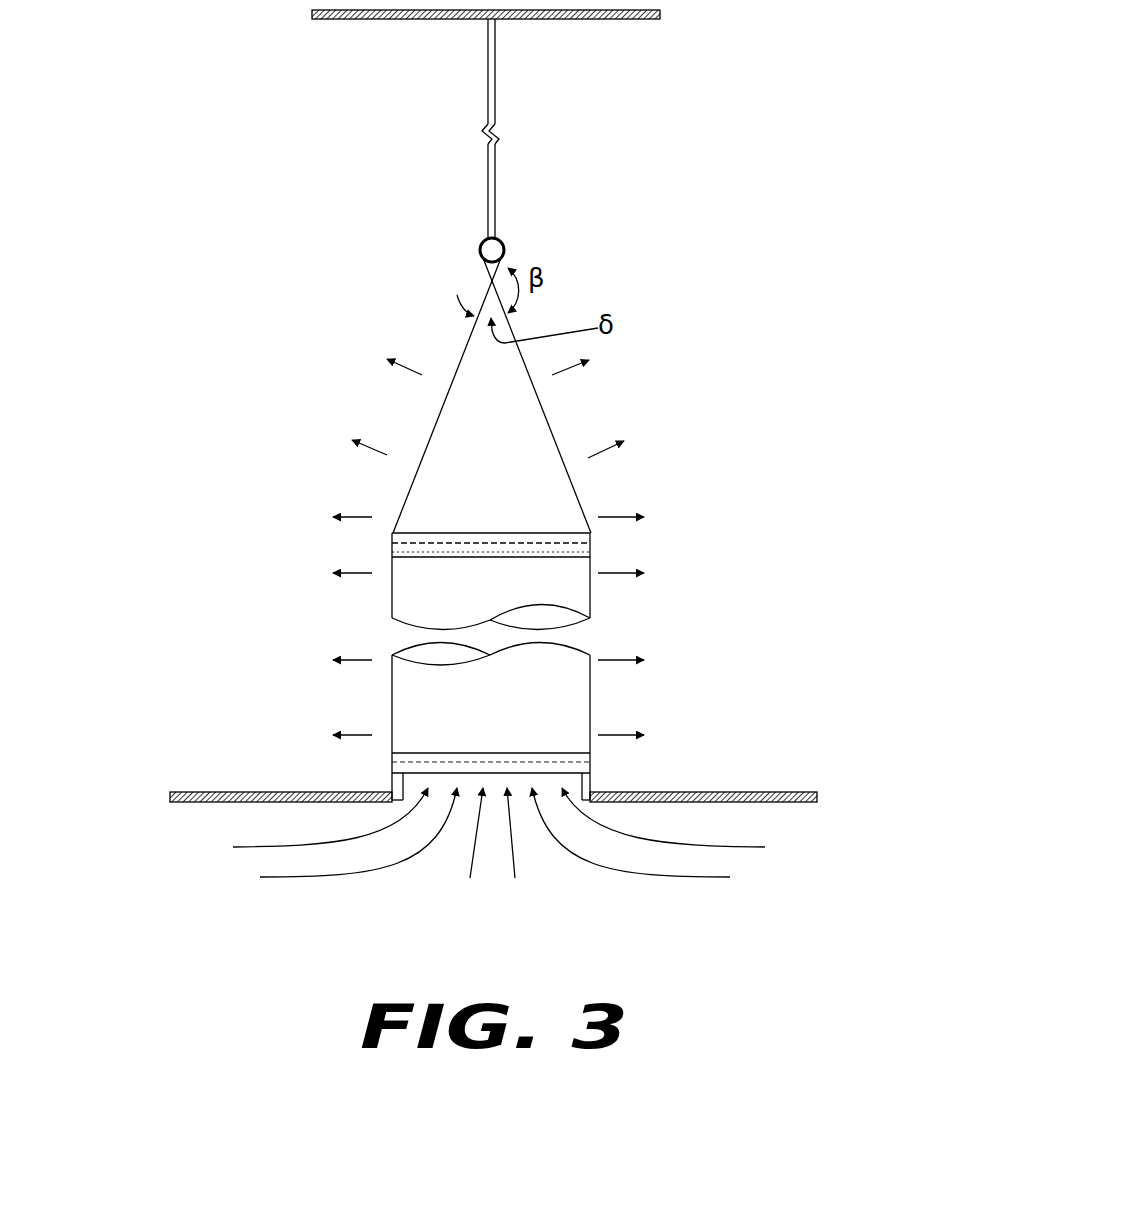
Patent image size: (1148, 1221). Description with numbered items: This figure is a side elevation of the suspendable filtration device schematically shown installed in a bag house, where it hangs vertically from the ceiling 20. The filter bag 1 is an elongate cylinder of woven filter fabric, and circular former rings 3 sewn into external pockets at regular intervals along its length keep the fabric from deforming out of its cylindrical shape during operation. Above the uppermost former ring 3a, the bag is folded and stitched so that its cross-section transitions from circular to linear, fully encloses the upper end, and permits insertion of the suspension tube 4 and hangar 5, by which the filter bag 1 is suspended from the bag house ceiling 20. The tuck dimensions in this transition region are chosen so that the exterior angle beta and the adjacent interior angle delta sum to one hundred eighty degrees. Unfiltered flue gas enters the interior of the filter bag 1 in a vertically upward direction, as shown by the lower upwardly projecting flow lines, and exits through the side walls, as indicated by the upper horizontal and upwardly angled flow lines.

The filter bag 1 is at (461, 358).
The circular former ring 3 is at (397, 780).
The uppermost former ring 3a is at (393, 533).
The suspension tube 4 is at (481, 240).
The hangar 5 is at (497, 234).
The ceiling 20 is at (612, 22).